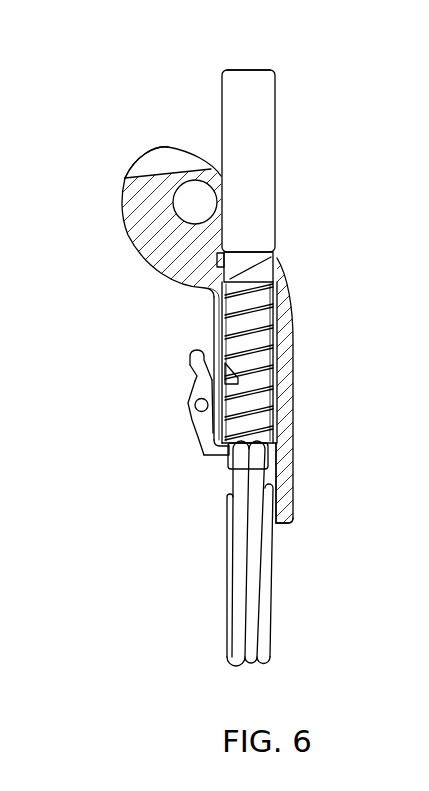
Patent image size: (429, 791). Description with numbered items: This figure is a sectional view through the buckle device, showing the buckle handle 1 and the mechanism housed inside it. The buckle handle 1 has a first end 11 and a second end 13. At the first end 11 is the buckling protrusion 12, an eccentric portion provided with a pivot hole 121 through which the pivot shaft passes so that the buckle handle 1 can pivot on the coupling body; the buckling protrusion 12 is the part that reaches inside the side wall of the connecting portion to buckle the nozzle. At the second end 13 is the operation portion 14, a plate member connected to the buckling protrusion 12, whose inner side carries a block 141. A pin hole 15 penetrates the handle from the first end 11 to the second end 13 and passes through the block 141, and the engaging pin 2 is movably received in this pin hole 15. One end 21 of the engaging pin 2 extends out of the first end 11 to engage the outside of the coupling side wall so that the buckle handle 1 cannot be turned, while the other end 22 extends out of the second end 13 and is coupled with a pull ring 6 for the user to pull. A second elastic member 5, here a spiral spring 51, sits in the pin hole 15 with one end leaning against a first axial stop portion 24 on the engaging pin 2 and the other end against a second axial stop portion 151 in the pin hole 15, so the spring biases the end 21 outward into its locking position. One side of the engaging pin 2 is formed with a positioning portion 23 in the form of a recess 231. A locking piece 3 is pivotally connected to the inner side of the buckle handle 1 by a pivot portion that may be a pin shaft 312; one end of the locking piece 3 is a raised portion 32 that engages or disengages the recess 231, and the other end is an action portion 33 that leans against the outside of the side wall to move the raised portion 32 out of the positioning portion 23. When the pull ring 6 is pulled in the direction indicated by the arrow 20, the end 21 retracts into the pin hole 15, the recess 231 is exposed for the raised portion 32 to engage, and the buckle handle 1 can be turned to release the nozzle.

The buckle handle 1 is at (214, 417).
The engaging pin 2 is at (278, 133).
The locking piece 3 is at (153, 406).
The second elastic member 5 is at (308, 362).
The spiral spring 51 is at (272, 321).
The pull ring 6 is at (272, 617).
The first end 11 is at (185, 197).
The buckling protrusion 12 is at (190, 192).
The pivot hole 121 is at (173, 173).
The second end 13 is at (281, 524).
The operation portion 14 is at (281, 483).
The block 141 is at (220, 312).
The pin hole 15 is at (288, 283).
The second axial stop portion 151 is at (278, 423).
The direction of movement 20 is at (203, 541).
The end of the engaging pin 21 is at (270, 62).
The other end of the engaging pin 22 is at (230, 480).
The positioning portion 23 is at (143, 373).
The recess 231 is at (230, 377).
The first axial stop portion 24 is at (270, 260).
The raised portion 32 is at (220, 450).
The action portion 33 is at (190, 352).
The pin shaft 312 is at (193, 410).